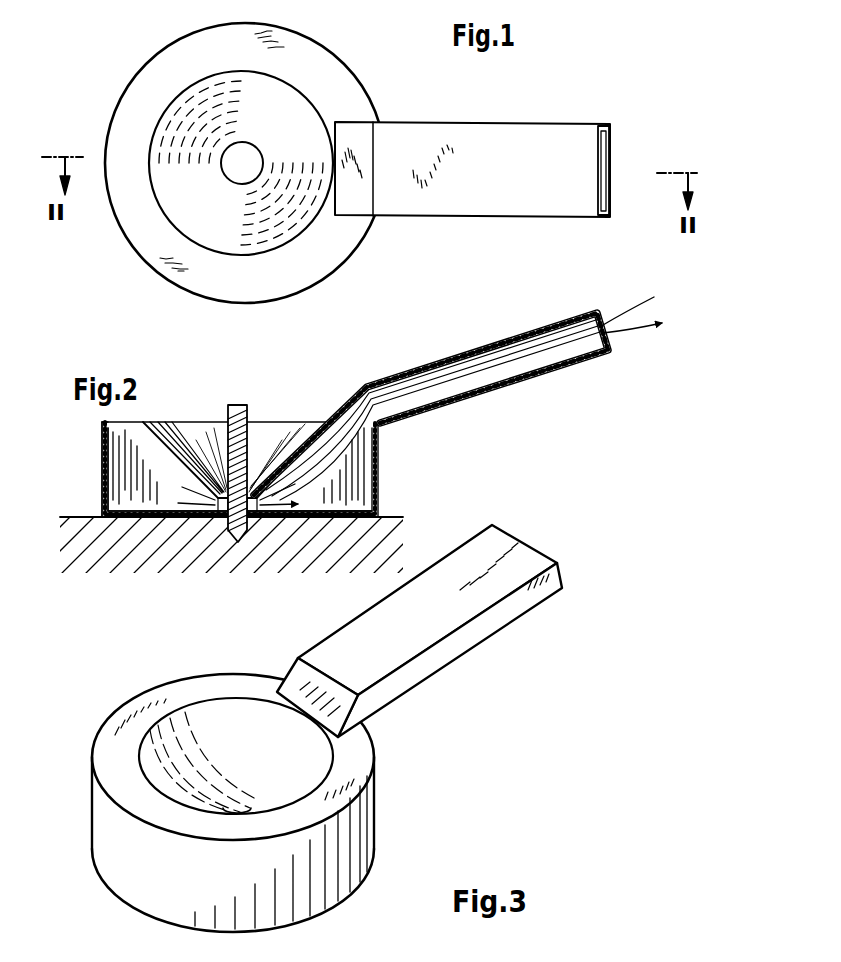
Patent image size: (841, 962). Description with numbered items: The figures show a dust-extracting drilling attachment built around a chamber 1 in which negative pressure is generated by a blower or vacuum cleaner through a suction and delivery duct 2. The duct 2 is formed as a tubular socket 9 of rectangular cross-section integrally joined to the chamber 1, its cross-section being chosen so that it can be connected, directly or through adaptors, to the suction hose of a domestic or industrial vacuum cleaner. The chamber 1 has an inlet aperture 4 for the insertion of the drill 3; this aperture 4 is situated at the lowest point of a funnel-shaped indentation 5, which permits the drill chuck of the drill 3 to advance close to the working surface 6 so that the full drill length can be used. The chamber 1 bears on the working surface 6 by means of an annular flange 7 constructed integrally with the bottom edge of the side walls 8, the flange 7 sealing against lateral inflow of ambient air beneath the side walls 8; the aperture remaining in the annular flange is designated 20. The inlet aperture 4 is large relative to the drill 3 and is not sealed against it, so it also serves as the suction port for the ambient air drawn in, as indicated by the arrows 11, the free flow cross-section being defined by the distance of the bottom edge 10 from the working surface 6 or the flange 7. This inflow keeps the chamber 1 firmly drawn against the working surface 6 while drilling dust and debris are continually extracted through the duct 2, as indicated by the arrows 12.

In FIG. 1, the chamber 1 is at (309, 48).
In FIG. 2, the chamber 1 is at (363, 477).
In FIG. 3, the chamber 1 is at (363, 845).
In FIG. 1, the suction and delivery duct 2 is at (607, 162).
In FIG. 2, the suction and delivery duct 2 is at (566, 352).
In FIG. 3, the suction and delivery duct 2 is at (562, 574).
In FIG. 2, the drill 3 is at (238, 405).
In FIG. 1, the inlet aperture 4 is at (253, 155).
In FIG. 2, the inlet aperture 4 is at (260, 485).
In FIG. 3, the inlet aperture 4 is at (233, 806).
In FIG. 1, the funnel-shaped indentation 5 is at (210, 96).
In FIG. 2, the funnel-shaped indentation 5 is at (165, 440).
In FIG. 3, the funnel-shaped indentation 5 is at (216, 707).
In FIG. 2, the working surface 6 is at (378, 540).
In FIG. 2, the annular flange 7 is at (135, 517).
In FIG. 2, the side walls 8 is at (102, 447).
In FIG. 1, the tubular socket 9 is at (405, 122).
In FIG. 2, the tubular socket 9 is at (470, 352).
In FIG. 2, the bottom edge 10 is at (216, 505).
In FIG. 2, the arrows (ambient air drawn in) 11 is at (207, 462).
In FIG. 2, the arrows (extraction of drilling debris) 12 is at (604, 320).
In FIG. 2, the aperture in the annular flange 20 is at (182, 513).